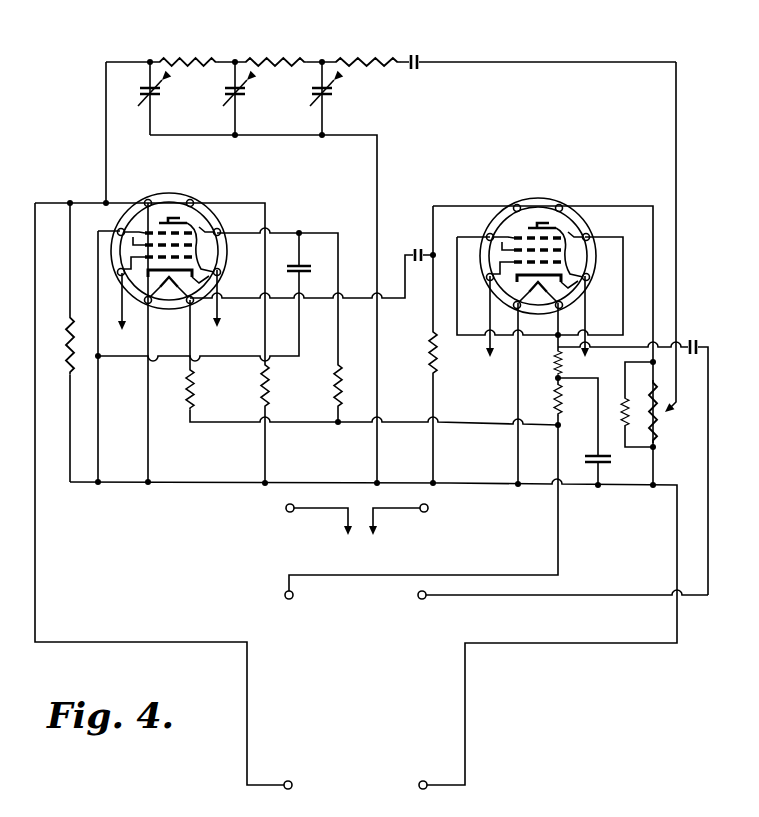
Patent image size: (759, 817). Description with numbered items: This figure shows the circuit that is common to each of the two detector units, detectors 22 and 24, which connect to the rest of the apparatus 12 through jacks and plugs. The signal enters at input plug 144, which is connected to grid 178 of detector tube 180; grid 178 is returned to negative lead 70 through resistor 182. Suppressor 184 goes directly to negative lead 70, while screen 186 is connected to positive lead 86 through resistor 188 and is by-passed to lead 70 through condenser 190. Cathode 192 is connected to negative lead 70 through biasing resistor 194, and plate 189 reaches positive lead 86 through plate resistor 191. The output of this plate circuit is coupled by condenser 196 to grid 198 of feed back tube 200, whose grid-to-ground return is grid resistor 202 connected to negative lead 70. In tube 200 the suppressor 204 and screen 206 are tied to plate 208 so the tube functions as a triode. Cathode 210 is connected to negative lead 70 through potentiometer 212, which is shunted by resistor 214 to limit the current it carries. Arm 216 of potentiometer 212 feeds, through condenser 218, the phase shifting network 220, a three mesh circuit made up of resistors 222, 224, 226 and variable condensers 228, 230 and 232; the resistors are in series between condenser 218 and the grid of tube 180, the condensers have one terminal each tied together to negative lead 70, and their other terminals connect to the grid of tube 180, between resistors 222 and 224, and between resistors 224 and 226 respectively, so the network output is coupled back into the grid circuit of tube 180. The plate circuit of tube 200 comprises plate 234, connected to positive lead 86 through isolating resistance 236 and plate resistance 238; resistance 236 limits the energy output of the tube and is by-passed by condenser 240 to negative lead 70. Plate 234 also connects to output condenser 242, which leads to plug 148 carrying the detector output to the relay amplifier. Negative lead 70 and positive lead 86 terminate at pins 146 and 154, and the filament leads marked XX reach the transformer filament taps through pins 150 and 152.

The tuned circuit 12 is at (373, 16).
The phase shifting network 220 is at (350, 33).
The resistor 222 is at (211, 54).
The resistor 224 is at (274, 56).
The resistor 226 is at (355, 56).
The condenser 218 is at (436, 60).
The variable condenser 228 is at (153, 96).
The variable condenser 230 is at (238, 96).
The variable condenser 232 is at (325, 96).
The detector tube 180 is at (173, 197).
The plate 189 is at (196, 220).
The suppressor 184 is at (138, 228).
The screen 186 is at (143, 245).
The grid 178 is at (140, 262).
The cathode 192 is at (205, 262).
The detector 22 is at (189, 326).
The resistor 182 is at (70, 372).
The plate resistor 191 is at (195, 388).
The biasing resistor 194 is at (270, 386).
The resistor 188 is at (343, 386).
The condenser 190 is at (301, 268).
The condenser 196 is at (416, 248).
The grid resistor 202 is at (438, 356).
The feed back tube 200 is at (533, 200).
The plate 234 is at (556, 207).
The suppressor 204 is at (512, 227).
The screen 206 is at (502, 240).
The grid 198 is at (502, 280).
The plate 208 is at (589, 222).
The cathode 210 is at (590, 274).
The detector 24 is at (527, 323).
The plate resistance 238 is at (555, 362).
The isolating resistance 236 is at (563, 403).
The condenser 240 is at (597, 455).
The positive lead 86 is at (465, 425).
The resistor 214 is at (625, 400).
The potentiometer 212 is at (660, 435).
The arm 216 is at (677, 402).
The output condenser 242 is at (700, 349).
The negative lead 70 is at (178, 484).
The pin 152 is at (293, 512).
The pin 150 is at (423, 513).
The pin 154 is at (290, 600).
The plug 148 is at (422, 600).
The input plug 144 is at (292, 781).
The pin 146 is at (425, 781).